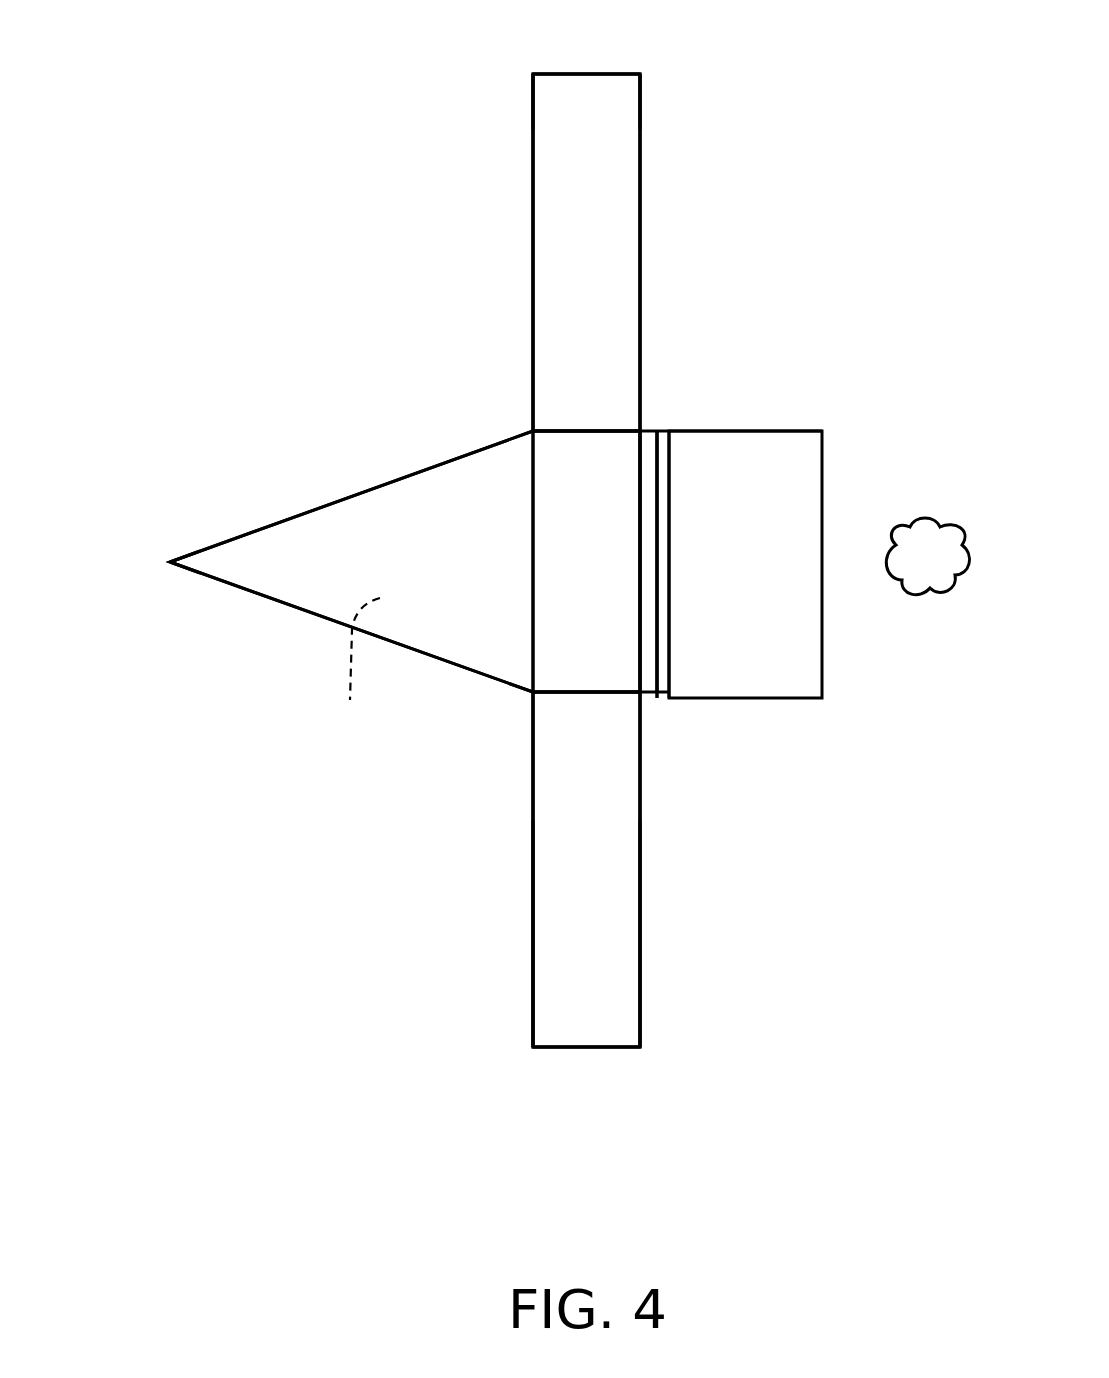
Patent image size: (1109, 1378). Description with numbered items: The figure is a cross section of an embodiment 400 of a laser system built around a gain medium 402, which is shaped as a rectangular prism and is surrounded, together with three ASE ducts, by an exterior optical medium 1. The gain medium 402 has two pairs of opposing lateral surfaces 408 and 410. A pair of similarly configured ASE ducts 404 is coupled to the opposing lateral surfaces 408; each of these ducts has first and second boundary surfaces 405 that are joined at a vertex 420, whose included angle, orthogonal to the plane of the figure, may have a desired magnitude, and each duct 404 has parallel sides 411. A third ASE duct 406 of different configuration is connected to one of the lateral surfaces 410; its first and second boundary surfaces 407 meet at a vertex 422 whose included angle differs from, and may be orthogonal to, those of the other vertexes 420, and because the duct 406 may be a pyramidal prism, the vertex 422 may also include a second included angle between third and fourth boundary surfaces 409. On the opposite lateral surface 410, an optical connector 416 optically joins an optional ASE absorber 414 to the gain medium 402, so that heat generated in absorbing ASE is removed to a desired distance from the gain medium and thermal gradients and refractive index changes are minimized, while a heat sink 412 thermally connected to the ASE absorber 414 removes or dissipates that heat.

The exterior optical medium 1 is at (938, 580).
The embodiment of a laser system 400 is at (530, 1215).
The gain medium 402 is at (540, 506).
The ASE duct 404 is at (632, 221).
The boundary surface 405 is at (547, 197).
The third ASE duct 406 is at (260, 543).
The boundary surface 407 is at (350, 497).
The lateral surface 408 is at (580, 428).
The boundary surface 409 is at (290, 587).
The lateral surface 410 is at (640, 510).
The parallel side 411 is at (533, 115).
The heat sink 412 is at (768, 688).
The ASE absorber 414 is at (660, 698).
The optical connector 416 is at (647, 440).
The vertex 420 is at (585, 74).
The vertex 422 is at (170, 562).